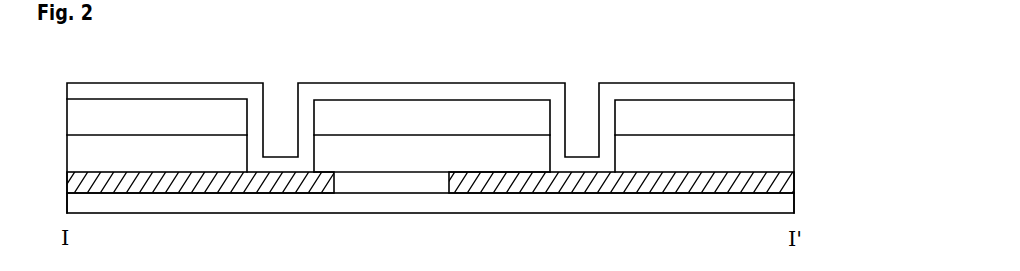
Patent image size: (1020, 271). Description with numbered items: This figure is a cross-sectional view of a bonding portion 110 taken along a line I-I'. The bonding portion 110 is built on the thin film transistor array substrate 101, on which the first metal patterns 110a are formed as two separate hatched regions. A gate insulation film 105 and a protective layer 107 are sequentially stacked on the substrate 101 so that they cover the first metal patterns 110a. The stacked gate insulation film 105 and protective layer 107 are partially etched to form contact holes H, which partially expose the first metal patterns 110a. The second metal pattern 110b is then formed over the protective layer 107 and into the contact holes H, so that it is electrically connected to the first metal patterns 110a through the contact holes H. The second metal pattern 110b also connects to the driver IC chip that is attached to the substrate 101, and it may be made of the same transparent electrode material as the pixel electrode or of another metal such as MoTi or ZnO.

The thin film transistor array substrate 101 is at (794, 204).
The first metal patterns 110a is at (794, 183).
The gate insulation film 105 is at (794, 156).
The protective layer 107 is at (794, 120).
The second metal pattern 110b is at (794, 93).
The bonding portion 110 is at (499, 148).
The contact holes H is at (279, 105).